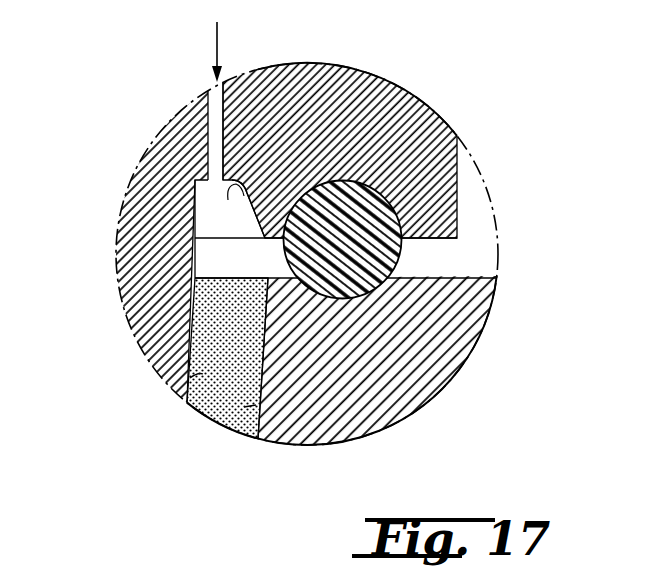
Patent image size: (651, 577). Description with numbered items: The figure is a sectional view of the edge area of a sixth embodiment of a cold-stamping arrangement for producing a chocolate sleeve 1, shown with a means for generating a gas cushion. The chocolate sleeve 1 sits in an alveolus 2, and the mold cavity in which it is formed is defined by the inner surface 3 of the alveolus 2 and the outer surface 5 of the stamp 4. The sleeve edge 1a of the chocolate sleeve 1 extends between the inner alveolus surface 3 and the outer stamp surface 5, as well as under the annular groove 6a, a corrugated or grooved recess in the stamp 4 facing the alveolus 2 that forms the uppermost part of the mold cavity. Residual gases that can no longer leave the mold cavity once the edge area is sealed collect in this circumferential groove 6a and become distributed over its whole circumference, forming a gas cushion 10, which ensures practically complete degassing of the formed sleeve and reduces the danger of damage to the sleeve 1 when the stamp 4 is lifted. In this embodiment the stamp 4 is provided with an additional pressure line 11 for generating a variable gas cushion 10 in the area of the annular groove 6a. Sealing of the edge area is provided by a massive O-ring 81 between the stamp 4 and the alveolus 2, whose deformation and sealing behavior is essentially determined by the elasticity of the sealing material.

The chocolate sleeve 1 is at (207, 328).
The sleeve edge 1a is at (200, 258).
The alveolus 2 is at (420, 370).
The inner surface 3 is at (245, 410).
The stamp 4 is at (432, 193).
The outer surface 5 is at (190, 378).
The annular groove 6a is at (253, 178).
The gas cushion 10 is at (215, 212).
The pressure line 11 is at (215, 117).
The O-ring 81 is at (400, 258).